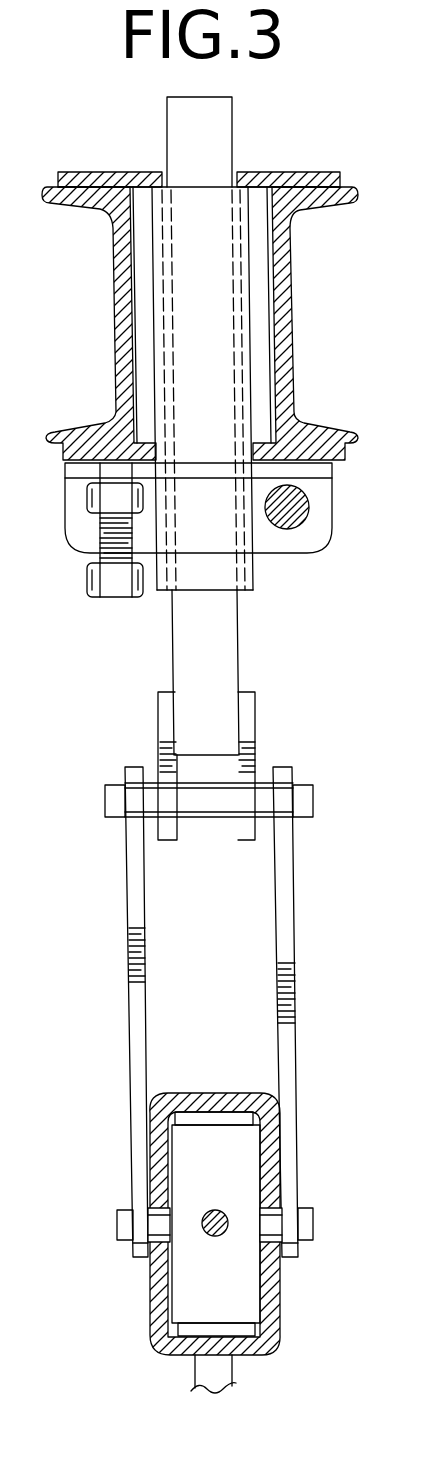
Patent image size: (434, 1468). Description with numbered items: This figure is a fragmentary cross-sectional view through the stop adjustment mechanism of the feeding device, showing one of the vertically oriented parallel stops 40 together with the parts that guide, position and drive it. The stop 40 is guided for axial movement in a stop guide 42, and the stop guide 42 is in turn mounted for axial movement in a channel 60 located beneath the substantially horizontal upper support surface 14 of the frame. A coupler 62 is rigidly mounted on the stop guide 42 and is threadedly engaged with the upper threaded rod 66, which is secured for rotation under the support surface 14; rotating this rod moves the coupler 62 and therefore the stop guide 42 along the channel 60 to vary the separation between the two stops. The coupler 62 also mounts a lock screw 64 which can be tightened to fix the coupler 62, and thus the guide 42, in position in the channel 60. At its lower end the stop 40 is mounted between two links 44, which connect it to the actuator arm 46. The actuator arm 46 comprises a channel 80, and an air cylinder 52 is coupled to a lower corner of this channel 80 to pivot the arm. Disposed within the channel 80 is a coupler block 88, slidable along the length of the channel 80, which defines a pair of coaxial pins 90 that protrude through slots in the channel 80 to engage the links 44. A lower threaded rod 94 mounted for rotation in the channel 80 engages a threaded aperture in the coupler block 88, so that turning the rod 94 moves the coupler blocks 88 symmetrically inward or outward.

The upper support surface 14 is at (88, 172).
The stop 40 is at (220, 312).
The stop guide 42 is at (243, 257).
The links 44 is at (133, 897).
The actuator arm 46 is at (223, 1224).
The air cylinder 52 is at (225, 1367).
The channel 60 is at (268, 213).
The coupler 62 is at (328, 498).
The lock screw 64 is at (95, 598).
The upper threaded rod 66 is at (298, 518).
The channel 80 is at (152, 1328).
The coupler block 88 is at (235, 1294).
The pins 90 is at (117, 1225).
The lower threaded rod 94 is at (215, 1210).